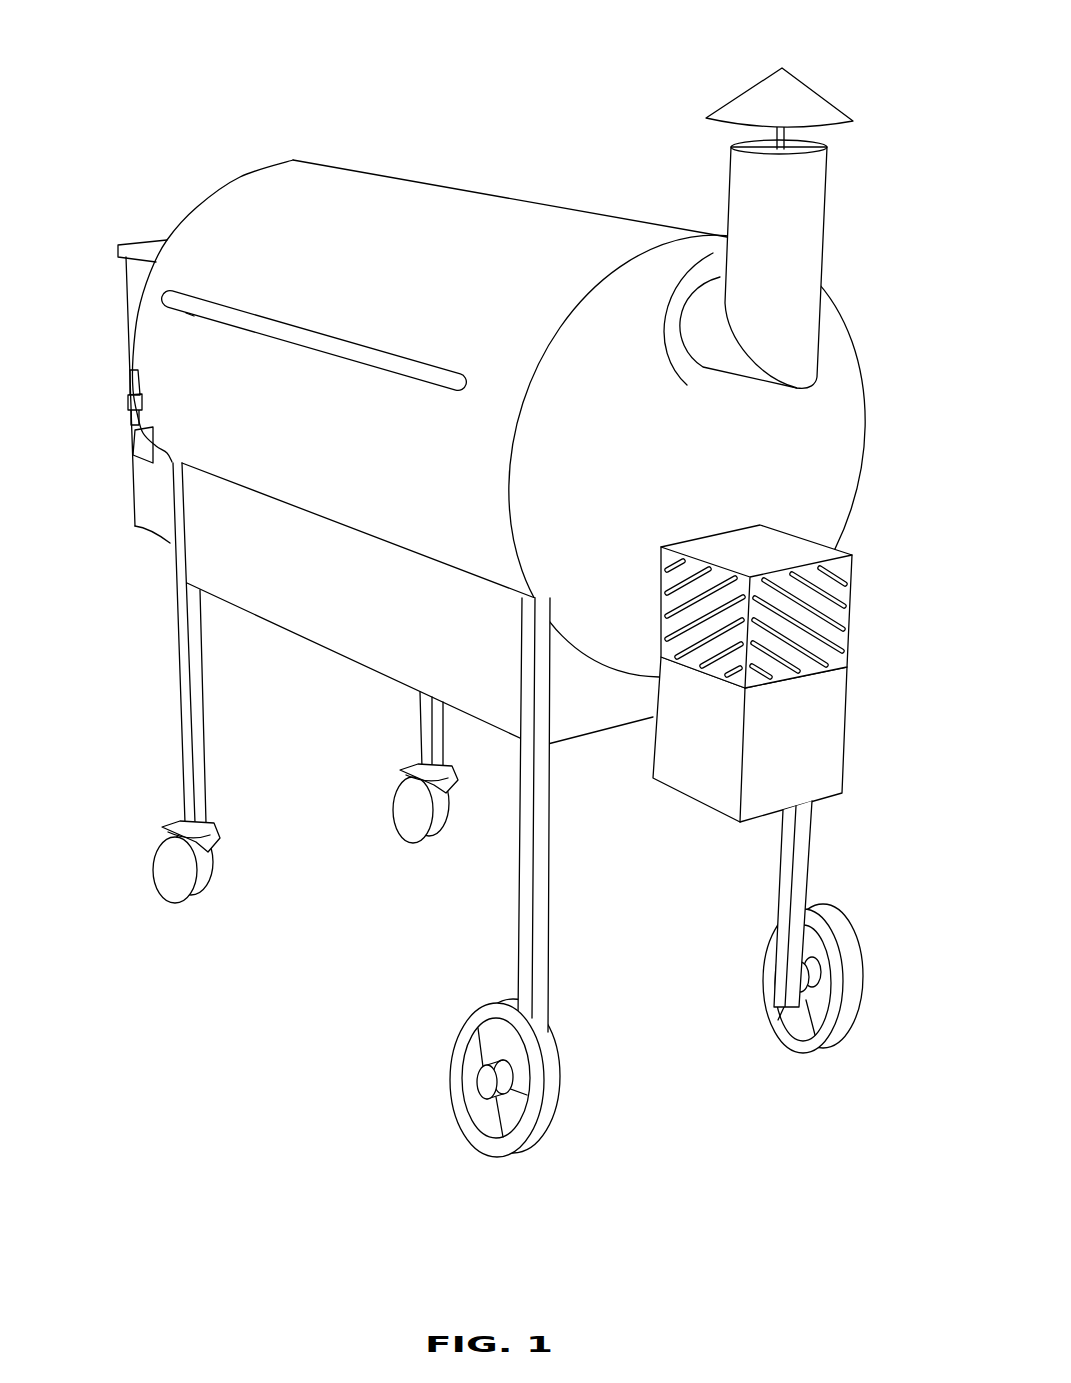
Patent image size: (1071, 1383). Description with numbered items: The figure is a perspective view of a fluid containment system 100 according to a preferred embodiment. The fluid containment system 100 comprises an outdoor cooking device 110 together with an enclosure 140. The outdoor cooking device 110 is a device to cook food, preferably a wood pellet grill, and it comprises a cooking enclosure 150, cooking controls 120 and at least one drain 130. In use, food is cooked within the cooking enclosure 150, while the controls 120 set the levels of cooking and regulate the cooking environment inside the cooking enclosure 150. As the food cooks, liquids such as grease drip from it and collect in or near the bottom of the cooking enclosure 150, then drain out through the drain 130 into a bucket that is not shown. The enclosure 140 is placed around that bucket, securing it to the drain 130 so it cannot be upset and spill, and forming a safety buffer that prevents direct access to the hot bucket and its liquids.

The fluid containment system 100 is at (489, 583).
The outdoor cooking device 110 is at (492, 128).
The cooking controls 120 is at (112, 407).
The drain 130 is at (878, 607).
The enclosure 140 is at (845, 730).
The cooking enclosure 150 is at (522, 200).